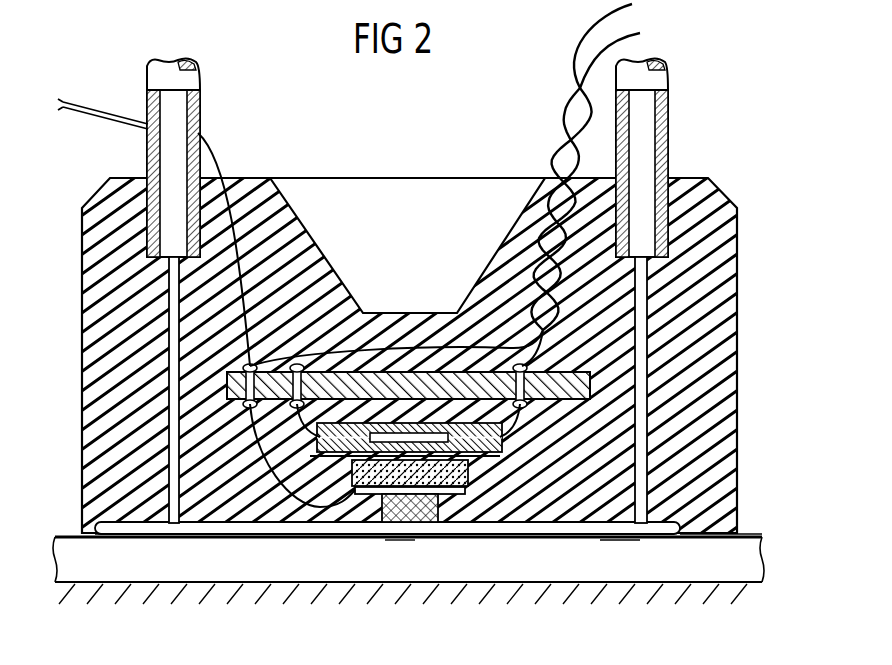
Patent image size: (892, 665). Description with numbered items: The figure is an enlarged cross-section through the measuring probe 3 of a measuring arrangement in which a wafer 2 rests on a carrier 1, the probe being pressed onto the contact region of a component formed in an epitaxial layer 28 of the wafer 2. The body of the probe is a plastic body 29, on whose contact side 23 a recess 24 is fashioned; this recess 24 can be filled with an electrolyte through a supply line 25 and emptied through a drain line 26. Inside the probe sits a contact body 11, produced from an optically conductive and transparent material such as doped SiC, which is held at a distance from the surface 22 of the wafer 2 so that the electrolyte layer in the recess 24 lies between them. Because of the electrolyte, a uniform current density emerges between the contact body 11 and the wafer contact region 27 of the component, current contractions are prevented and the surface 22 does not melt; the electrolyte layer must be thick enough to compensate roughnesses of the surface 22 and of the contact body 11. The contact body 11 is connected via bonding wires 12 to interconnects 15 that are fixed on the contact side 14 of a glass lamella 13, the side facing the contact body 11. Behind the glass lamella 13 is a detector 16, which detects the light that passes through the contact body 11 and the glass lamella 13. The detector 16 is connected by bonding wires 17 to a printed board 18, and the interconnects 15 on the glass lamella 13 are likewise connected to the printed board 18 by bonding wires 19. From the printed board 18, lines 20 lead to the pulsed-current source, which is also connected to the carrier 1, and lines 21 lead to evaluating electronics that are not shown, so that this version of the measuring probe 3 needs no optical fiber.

The carrier 1 is at (709, 618).
The wafer 2 is at (711, 573).
The measuring probe 3 is at (700, 168).
The contact body 11 is at (428, 523).
The bonding wires 12 is at (465, 484).
The glass lamella 13 is at (482, 447).
The contact side 14 is at (332, 523).
The interconnects 15 is at (352, 486).
The detector 16 is at (268, 477).
The bonding wires 17 is at (258, 419).
The printed board 18 is at (385, 388).
The bonding wires 19 is at (268, 523).
The lines 20 is at (232, 152).
The lines 21 is at (564, 112).
The surface 22 is at (746, 536).
The contact side 23 is at (130, 551).
The recess 24 is at (508, 535).
The supply line 25 is at (173, 348).
The drain line 26 is at (640, 316).
The wafer contact region 27 is at (398, 540).
The epitaxial layer 28 is at (620, 556).
The plastic body 29 is at (722, 395).